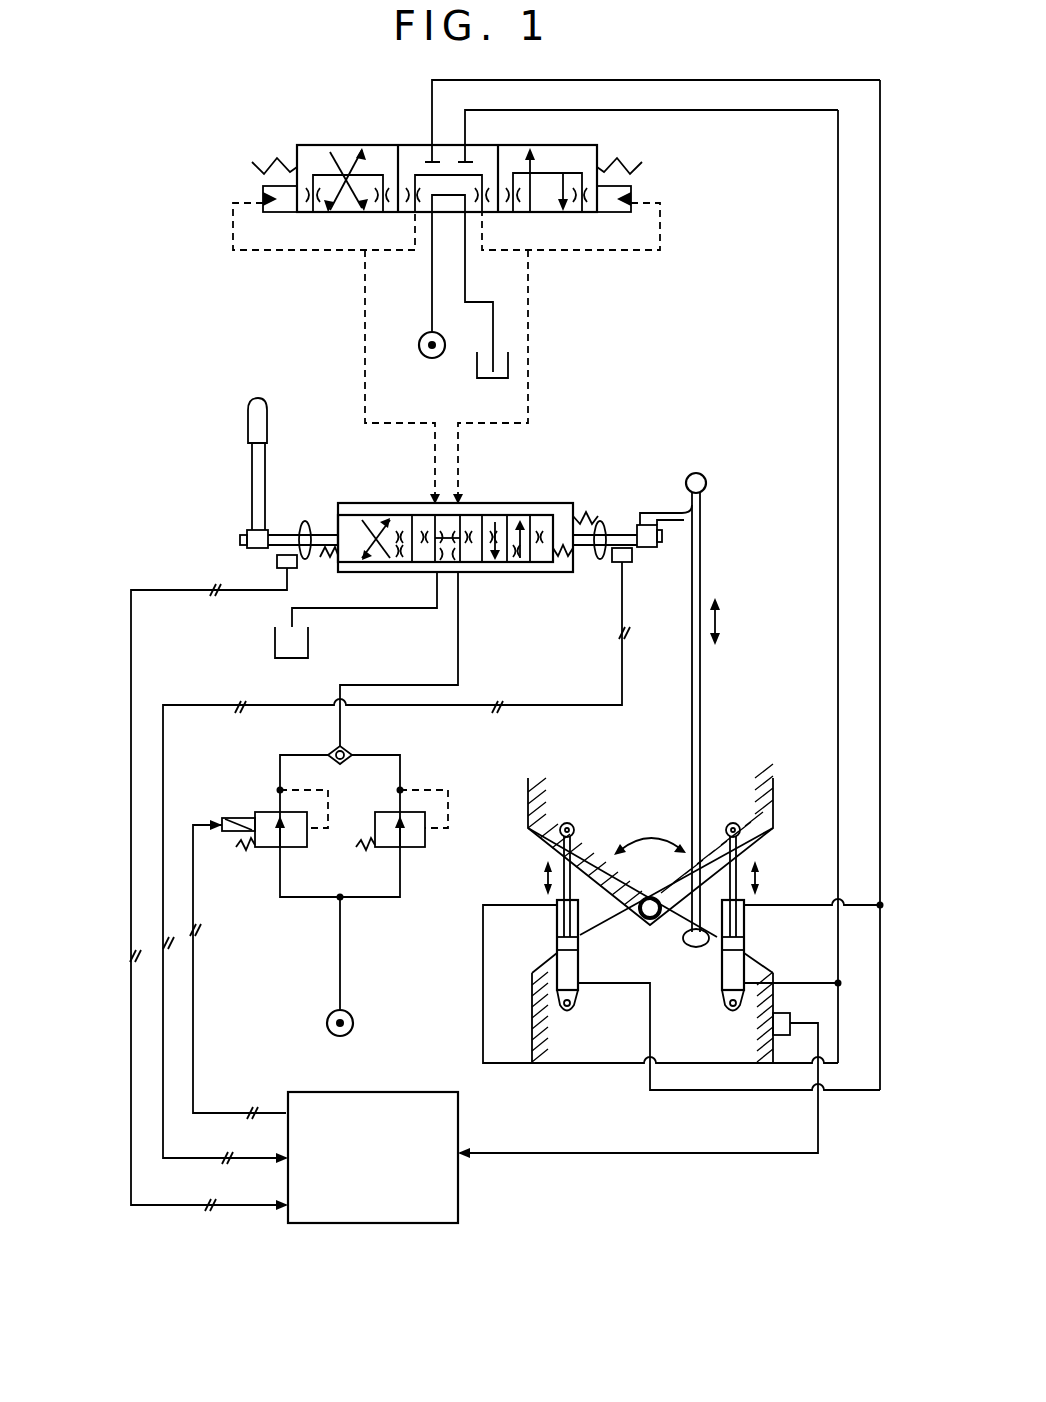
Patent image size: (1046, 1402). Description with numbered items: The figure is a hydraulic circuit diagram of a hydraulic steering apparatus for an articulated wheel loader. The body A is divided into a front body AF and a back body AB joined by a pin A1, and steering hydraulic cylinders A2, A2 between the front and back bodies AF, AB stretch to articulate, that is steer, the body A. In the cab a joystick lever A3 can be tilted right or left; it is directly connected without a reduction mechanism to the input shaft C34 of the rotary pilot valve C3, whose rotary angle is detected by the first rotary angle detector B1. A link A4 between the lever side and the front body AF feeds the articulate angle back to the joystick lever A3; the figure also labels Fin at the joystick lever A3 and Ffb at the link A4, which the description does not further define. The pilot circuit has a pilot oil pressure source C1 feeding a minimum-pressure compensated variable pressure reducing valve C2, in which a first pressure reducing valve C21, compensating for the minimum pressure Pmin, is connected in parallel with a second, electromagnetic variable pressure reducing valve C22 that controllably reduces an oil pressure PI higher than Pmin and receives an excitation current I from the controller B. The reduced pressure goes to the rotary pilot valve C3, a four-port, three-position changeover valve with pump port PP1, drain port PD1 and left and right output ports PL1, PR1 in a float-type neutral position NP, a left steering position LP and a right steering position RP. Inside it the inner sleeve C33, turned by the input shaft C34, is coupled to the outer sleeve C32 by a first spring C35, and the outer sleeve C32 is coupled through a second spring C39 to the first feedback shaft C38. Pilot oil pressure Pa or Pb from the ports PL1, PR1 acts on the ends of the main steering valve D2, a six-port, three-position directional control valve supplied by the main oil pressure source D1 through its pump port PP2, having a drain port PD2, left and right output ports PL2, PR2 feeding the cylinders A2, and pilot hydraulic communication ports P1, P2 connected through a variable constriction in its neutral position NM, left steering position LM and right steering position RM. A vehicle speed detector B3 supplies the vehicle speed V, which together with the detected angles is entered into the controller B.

The main steering valve D2 is at (312, 117).
The left steering position LM is at (341, 135).
The neutral position NM is at (449, 135).
The right steering position RM is at (534, 135).
The left output port PL2 is at (430, 145).
The right output port PR2 is at (470, 145).
The pilot hydraulic communication port P1 is at (405, 214).
The pilot hydraulic communication port P2 is at (487, 214).
The pump port PP2 is at (428, 235).
The drain port PD2 is at (472, 235).
The pilot oil pressure Pa is at (365, 350).
The pilot oil pressure Pb is at (528, 350).
The main oil pressure source D1 is at (423, 357).
The joystick lever A3 is at (250, 473).
The input force Fin is at (259, 384).
The input shaft C34 is at (284, 526).
The first rotary angle detector B1 is at (277, 560).
The rotary pilot valve C3 is at (568, 447).
The left steering position LP is at (370, 492).
The neutral position NP is at (449, 493).
The right steering position RP is at (526, 492).
The left output port PL1 is at (433, 503).
The right output port PR1 is at (460, 503).
The first spring C35 is at (325, 560).
The second spring C39 is at (597, 516).
The drain port PD1 is at (437, 566).
The pump port PP1 is at (460, 565).
The outer sleeve C32 is at (543, 573).
The inner sleeve C33 is at (515, 558).
The first feedback shaft C38 is at (650, 514).
The link A4 is at (703, 528).
The vehicle speed detector B3 is at (632, 556).
The feedback force Ffb is at (715, 622).
The body A is at (722, 738).
The back body AB is at (772, 784).
The pin A1 is at (650, 897).
The steering hydraulic cylinders A2 is at (582, 955).
The front body AF is at (542, 1015).
The minimum-pressure compensated variable pressure reducing valve C2 is at (292, 914).
The second variable pressure reducing valve C22 is at (268, 848).
The first pressure reducing valve C21 is at (413, 848).
The oil pressure PI is at (278, 776).
The minimum pressure Pmin is at (400, 772).
The pilot oil pressure source C1 is at (354, 1023).
The excitation current I is at (196, 1028).
The controller B is at (466, 1186).
The vehicle speed V is at (643, 1155).